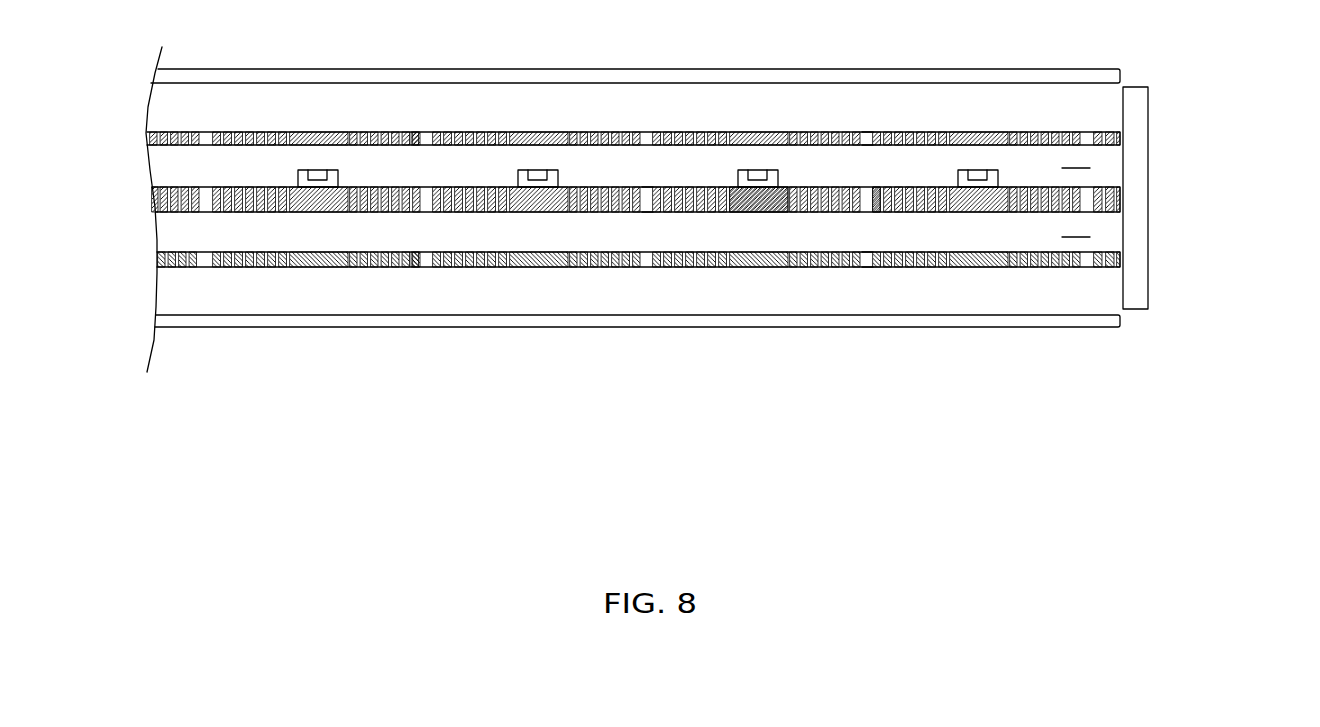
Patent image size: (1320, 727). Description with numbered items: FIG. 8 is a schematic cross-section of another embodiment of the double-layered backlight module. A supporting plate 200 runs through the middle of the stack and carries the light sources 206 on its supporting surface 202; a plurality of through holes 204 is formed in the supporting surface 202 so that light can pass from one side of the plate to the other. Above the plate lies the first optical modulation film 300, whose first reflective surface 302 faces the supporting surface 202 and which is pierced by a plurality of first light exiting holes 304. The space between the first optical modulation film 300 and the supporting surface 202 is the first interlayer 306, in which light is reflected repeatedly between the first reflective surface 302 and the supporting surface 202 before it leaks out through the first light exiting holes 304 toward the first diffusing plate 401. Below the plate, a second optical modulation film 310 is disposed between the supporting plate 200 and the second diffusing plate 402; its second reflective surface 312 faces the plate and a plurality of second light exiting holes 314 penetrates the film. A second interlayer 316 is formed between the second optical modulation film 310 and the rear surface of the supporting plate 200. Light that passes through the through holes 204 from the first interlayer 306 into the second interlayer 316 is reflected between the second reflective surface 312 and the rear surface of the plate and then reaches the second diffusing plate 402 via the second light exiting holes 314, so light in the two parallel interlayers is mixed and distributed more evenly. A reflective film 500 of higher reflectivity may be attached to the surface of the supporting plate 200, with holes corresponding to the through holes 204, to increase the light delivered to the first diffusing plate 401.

The supporting plate 200 is at (1042, 210).
The supporting surface 202 is at (872, 168).
The through holes 204 is at (653, 220).
The light sources 206 is at (743, 200).
The first optical modulation film 300 is at (754, 133).
The first reflective surface 302 is at (413, 163).
The first light exiting holes 304 is at (872, 120).
The first interlayer 306 is at (1082, 172).
The second optical modulation film 310 is at (538, 257).
The second reflective surface 312 is at (413, 232).
The second light exiting holes 314 is at (873, 278).
The second interlayer 316 is at (1082, 240).
The first diffusing plate 401 is at (556, 78).
The second diffusing plate 402 is at (430, 322).
The reflective film 500 is at (1090, 185).